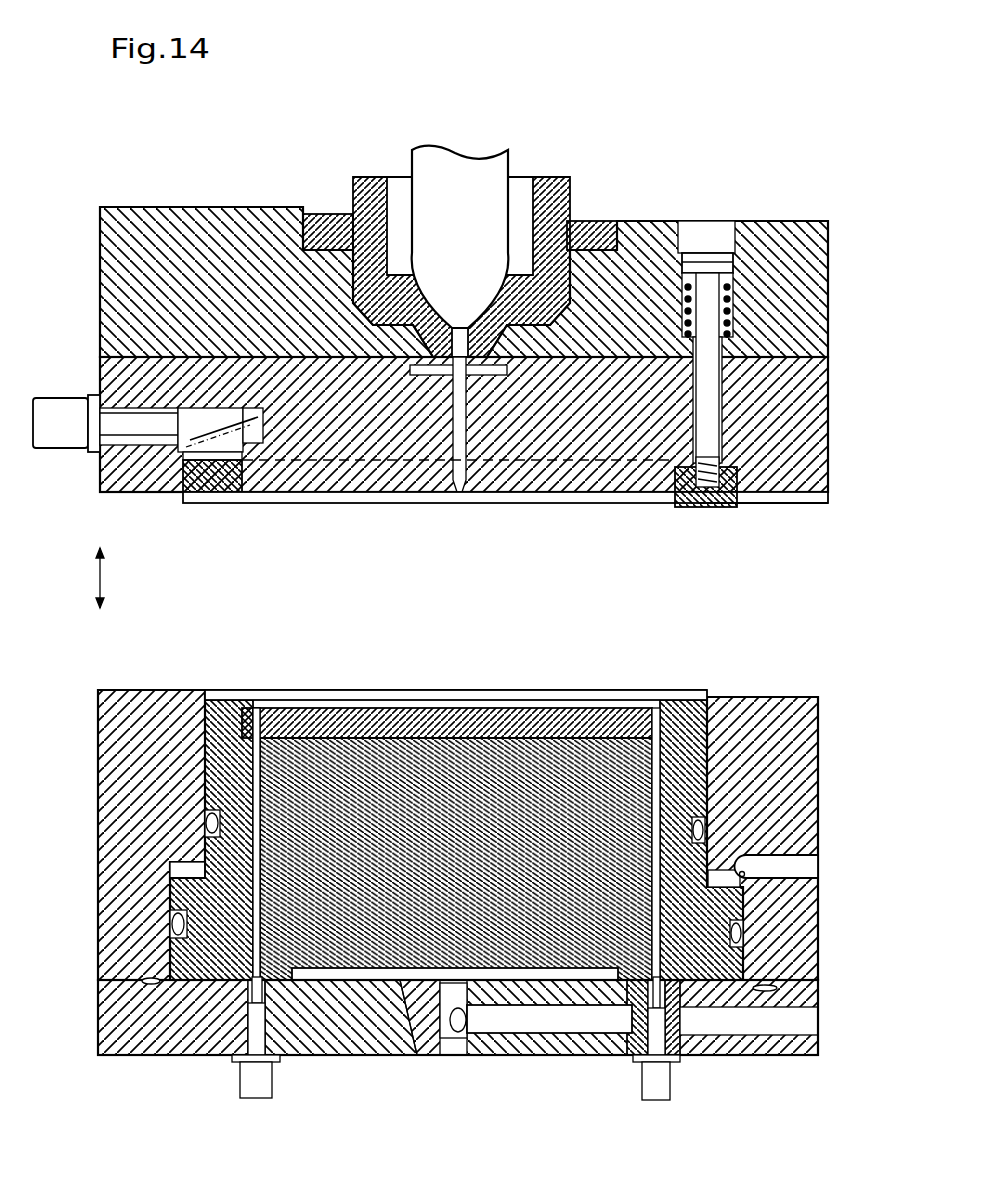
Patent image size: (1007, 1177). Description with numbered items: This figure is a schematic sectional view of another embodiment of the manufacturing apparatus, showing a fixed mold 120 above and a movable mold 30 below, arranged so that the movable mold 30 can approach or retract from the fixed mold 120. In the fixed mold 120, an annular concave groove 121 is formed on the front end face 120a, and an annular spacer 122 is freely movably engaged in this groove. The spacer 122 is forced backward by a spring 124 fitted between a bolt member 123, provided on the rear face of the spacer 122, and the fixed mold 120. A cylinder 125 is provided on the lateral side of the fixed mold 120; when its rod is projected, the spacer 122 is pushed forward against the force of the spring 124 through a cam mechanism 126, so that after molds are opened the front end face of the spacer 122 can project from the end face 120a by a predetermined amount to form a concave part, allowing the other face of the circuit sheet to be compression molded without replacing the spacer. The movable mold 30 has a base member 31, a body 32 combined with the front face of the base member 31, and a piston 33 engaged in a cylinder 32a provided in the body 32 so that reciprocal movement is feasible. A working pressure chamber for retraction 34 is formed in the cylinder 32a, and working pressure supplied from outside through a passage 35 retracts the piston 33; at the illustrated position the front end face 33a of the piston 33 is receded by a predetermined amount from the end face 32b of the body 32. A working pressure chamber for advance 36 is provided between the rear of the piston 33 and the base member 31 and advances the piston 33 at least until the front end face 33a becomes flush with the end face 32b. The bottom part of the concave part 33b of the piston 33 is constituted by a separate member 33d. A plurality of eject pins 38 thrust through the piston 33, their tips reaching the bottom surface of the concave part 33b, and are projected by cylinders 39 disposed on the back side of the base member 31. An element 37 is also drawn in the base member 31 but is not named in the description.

The fixed mold 120 is at (757, 177).
The front end face of the fixed mold 120a is at (765, 505).
The annular concave groove 121 is at (173, 492).
The annular spacer 122 is at (215, 492).
The bolt member 123 is at (710, 362).
The spring 124 is at (733, 298).
The cylinder 125 is at (62, 397).
The cam mechanism 126 is at (212, 400).
The movable mold 30 is at (827, 655).
The base member 31 is at (173, 1052).
The body 32 is at (108, 830).
The cylinder 32a is at (203, 795).
The end face of the body 32b is at (748, 700).
The piston 33 is at (205, 745).
The front end face of the piston 33a is at (682, 708).
The concave part 33b is at (540, 712).
The member 33d is at (467, 708).
The working pressure chamber for retraction 34 is at (723, 880).
The passage 35 is at (813, 867).
The working pressure chamber for advance 36 is at (395, 979).
The pipe 37 is at (533, 1023).
The eject pins 38 is at (268, 1020).
The cylinders 39 is at (273, 1085).